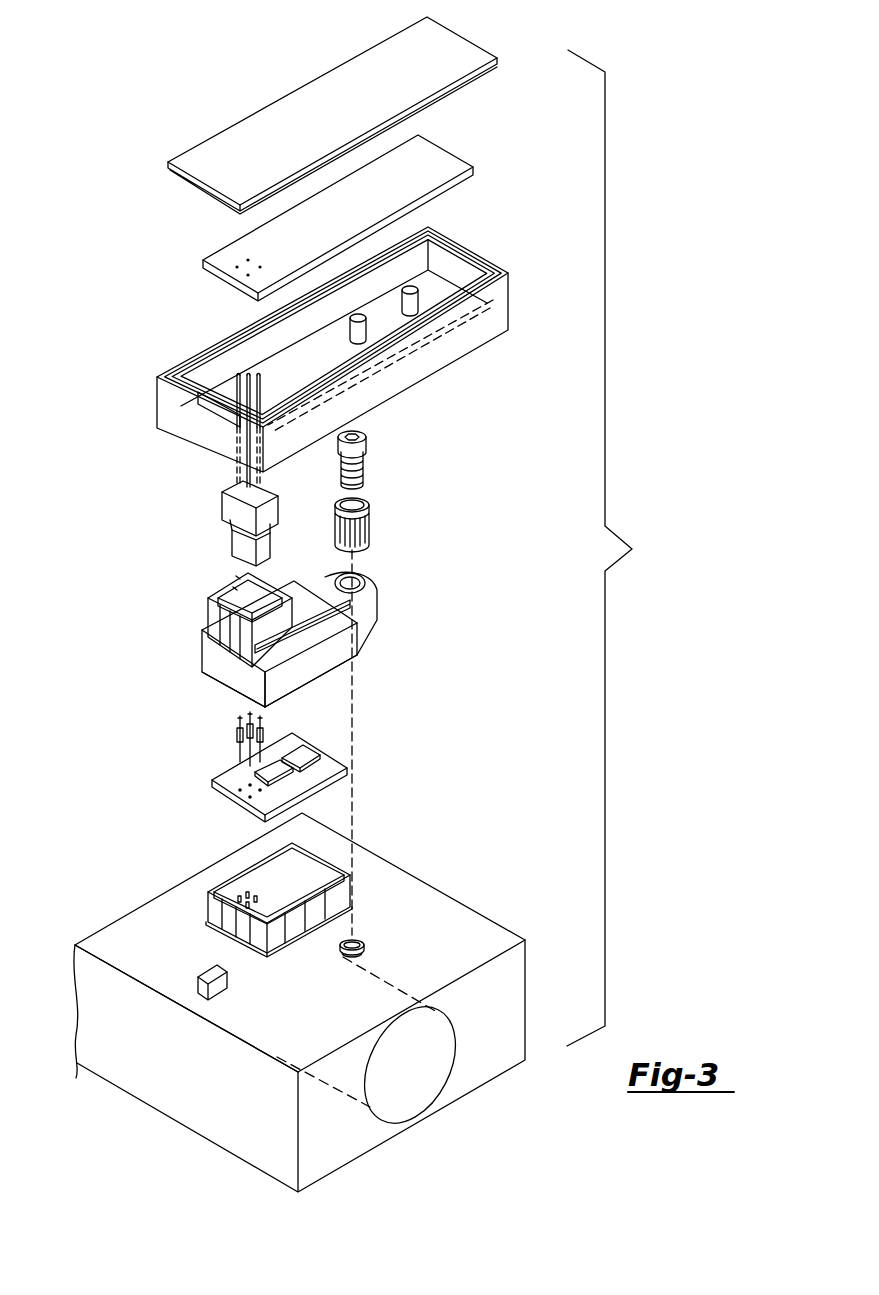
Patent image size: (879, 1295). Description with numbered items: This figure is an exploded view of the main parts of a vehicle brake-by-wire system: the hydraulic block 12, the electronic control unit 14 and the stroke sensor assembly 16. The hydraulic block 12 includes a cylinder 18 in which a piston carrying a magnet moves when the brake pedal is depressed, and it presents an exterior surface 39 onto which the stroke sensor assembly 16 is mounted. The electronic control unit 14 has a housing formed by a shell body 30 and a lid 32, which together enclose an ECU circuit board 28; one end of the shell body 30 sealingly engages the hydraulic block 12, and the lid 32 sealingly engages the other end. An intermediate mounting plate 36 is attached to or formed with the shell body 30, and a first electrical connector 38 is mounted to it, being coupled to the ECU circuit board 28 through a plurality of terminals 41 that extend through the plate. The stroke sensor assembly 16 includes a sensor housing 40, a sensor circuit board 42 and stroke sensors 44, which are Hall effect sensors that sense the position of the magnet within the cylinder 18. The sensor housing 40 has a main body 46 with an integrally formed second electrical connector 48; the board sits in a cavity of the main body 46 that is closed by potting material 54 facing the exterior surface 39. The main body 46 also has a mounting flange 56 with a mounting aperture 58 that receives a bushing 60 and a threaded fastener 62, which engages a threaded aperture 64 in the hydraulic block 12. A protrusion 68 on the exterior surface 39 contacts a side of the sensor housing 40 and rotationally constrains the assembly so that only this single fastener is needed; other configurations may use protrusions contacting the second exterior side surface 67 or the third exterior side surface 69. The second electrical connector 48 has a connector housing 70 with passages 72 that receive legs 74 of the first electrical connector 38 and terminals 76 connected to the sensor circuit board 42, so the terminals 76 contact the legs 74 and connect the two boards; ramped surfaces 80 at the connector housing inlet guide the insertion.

The hydraulic block 12 is at (305, 1000).
The electronic control unit 14 is at (133, 218).
The stroke sensor assembly 16 is at (135, 659).
The cylinder 18 is at (433, 1040).
The ECU circuit board 28 is at (442, 163).
The shell body 30 is at (335, 339).
The lid 32 is at (468, 55).
The intermediate mounting plate 36 is at (440, 285).
The first electrical connector 38 is at (232, 493).
The exterior surface 39 is at (265, 1030).
The sensor housing 40 is at (282, 635).
The terminals 41 is at (237, 380).
The sensor circuit board 42 is at (270, 777).
The stroke sensors 44 is at (270, 765).
The main body 46 is at (330, 657).
The second electrical connector 48 is at (196, 604).
The potting material 54 is at (213, 902).
The mounting flange 56 is at (375, 602).
The mounting aperture 58 is at (358, 585).
The bushing 60 is at (370, 527).
The threaded fastener 62 is at (367, 463).
The threaded aperture 64 is at (360, 942).
The second exterior side surface 67 is at (220, 670).
The protrusion 68 is at (200, 983).
The third exterior side surface 69 is at (310, 660).
The connector housing 70 is at (347, 625).
The passages 72 is at (210, 612).
The legs 74 is at (235, 540).
The terminals 76 is at (237, 740).
The ramped surfaces 80 is at (233, 588).